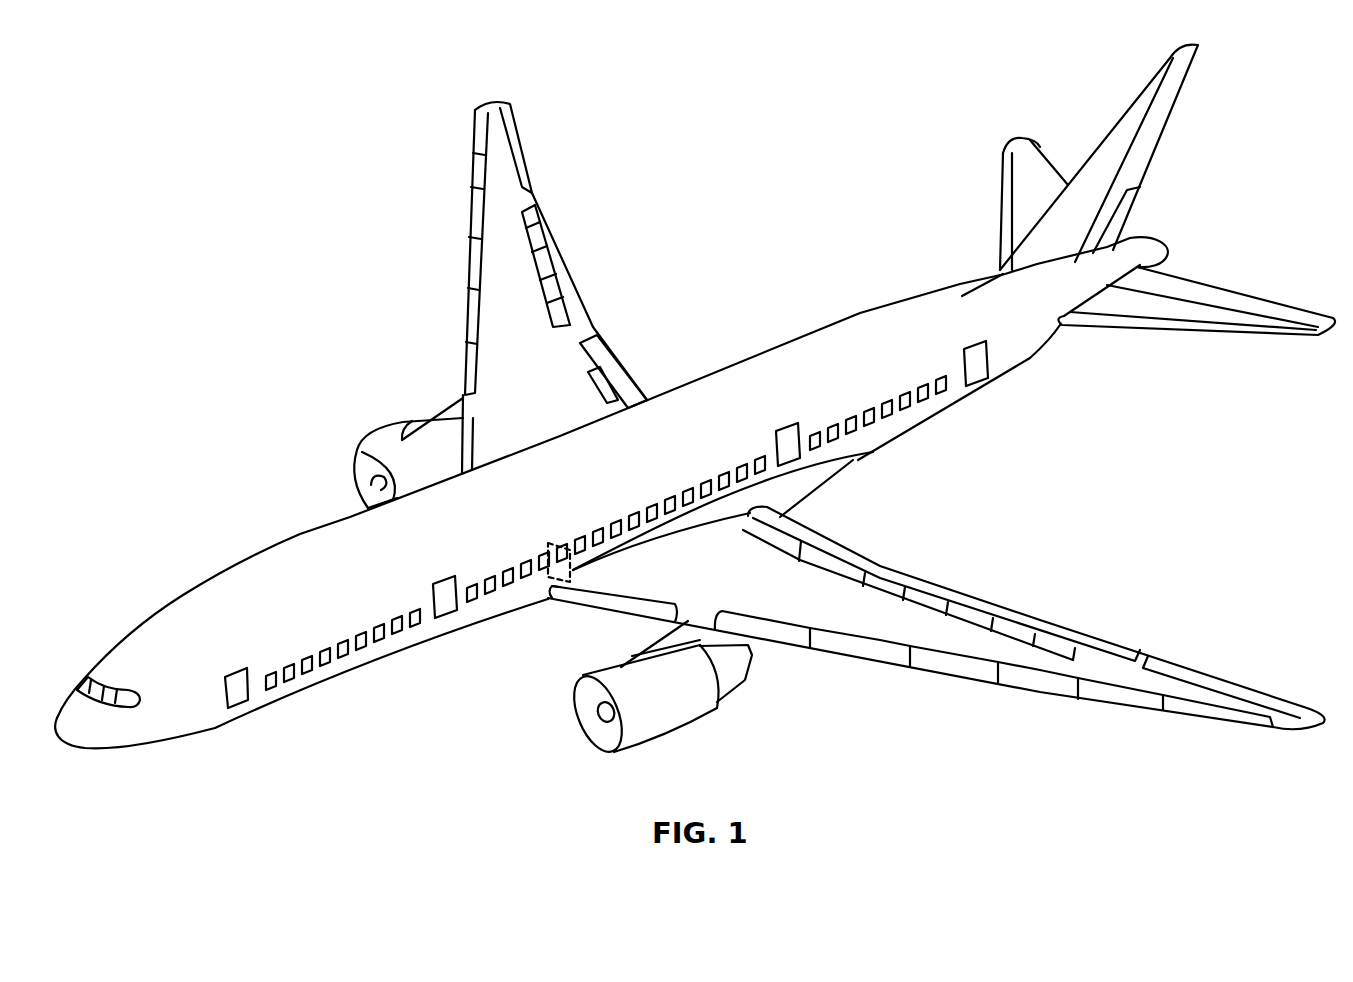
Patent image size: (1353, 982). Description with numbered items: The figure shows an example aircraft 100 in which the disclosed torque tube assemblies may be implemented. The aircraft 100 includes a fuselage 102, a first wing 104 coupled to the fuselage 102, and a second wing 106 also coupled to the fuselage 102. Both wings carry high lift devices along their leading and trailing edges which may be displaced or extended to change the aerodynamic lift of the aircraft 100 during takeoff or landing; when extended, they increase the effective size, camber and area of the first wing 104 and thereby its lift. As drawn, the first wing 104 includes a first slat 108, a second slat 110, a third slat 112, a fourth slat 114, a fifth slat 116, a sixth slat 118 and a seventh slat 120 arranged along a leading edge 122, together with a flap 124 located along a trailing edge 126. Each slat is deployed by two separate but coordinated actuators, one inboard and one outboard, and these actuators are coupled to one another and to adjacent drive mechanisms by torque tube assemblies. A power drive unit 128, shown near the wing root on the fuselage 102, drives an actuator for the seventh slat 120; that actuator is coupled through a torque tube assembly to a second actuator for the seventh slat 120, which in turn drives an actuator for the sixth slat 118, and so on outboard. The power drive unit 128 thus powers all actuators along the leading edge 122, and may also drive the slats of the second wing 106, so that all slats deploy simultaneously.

The aircraft 100 is at (244, 150).
The fuselage 102 is at (162, 628).
The first wing 104 is at (827, 573).
The second wing 106 is at (551, 360).
The first slat 108 is at (1215, 715).
The second slat 110 is at (1120, 700).
The third slat 112 is at (1035, 688).
The fourth slat 114 is at (942, 672).
The fifth slat 116 is at (860, 655).
The sixth slat 118 is at (777, 640).
The seventh slat 120 is at (572, 593).
The leading edge 122 is at (595, 610).
The flap 124 is at (948, 595).
The trailing edge 126 is at (1118, 640).
The power drive unit 128 is at (548, 545).